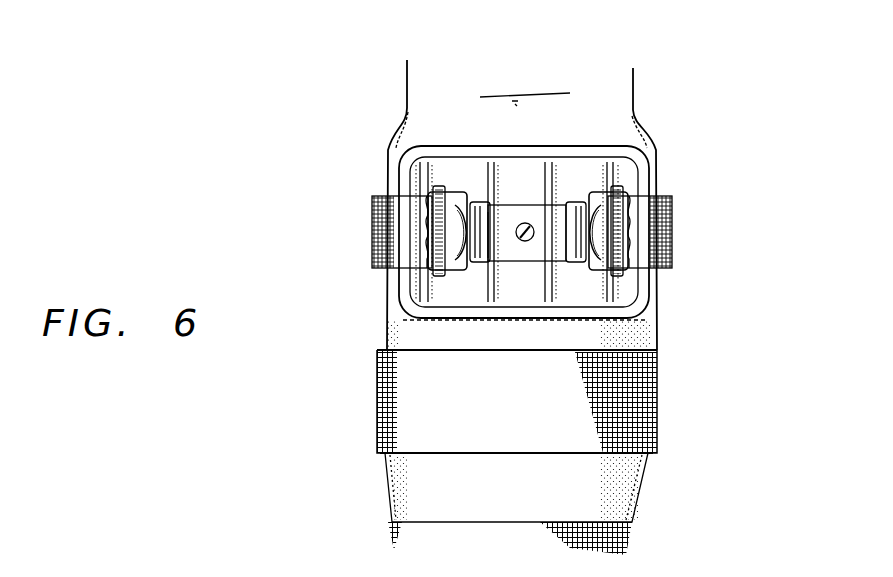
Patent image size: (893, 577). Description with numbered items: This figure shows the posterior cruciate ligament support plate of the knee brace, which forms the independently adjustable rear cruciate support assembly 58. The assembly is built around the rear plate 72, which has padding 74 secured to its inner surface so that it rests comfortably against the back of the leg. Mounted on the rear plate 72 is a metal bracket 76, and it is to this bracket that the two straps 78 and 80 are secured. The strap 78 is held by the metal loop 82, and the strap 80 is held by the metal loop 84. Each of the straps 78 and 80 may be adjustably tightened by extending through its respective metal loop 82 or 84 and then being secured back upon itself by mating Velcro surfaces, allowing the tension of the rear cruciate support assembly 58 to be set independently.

The rear cruciate support assembly 58 is at (340, 200).
The rear plate 72 is at (540, 180).
The padding 74 is at (592, 152).
The metal bracket 76 is at (500, 268).
The strap 78 is at (372, 226).
The strap 80 is at (672, 228).
The metal loop 82 is at (441, 192).
The metal loop 84 is at (620, 180).